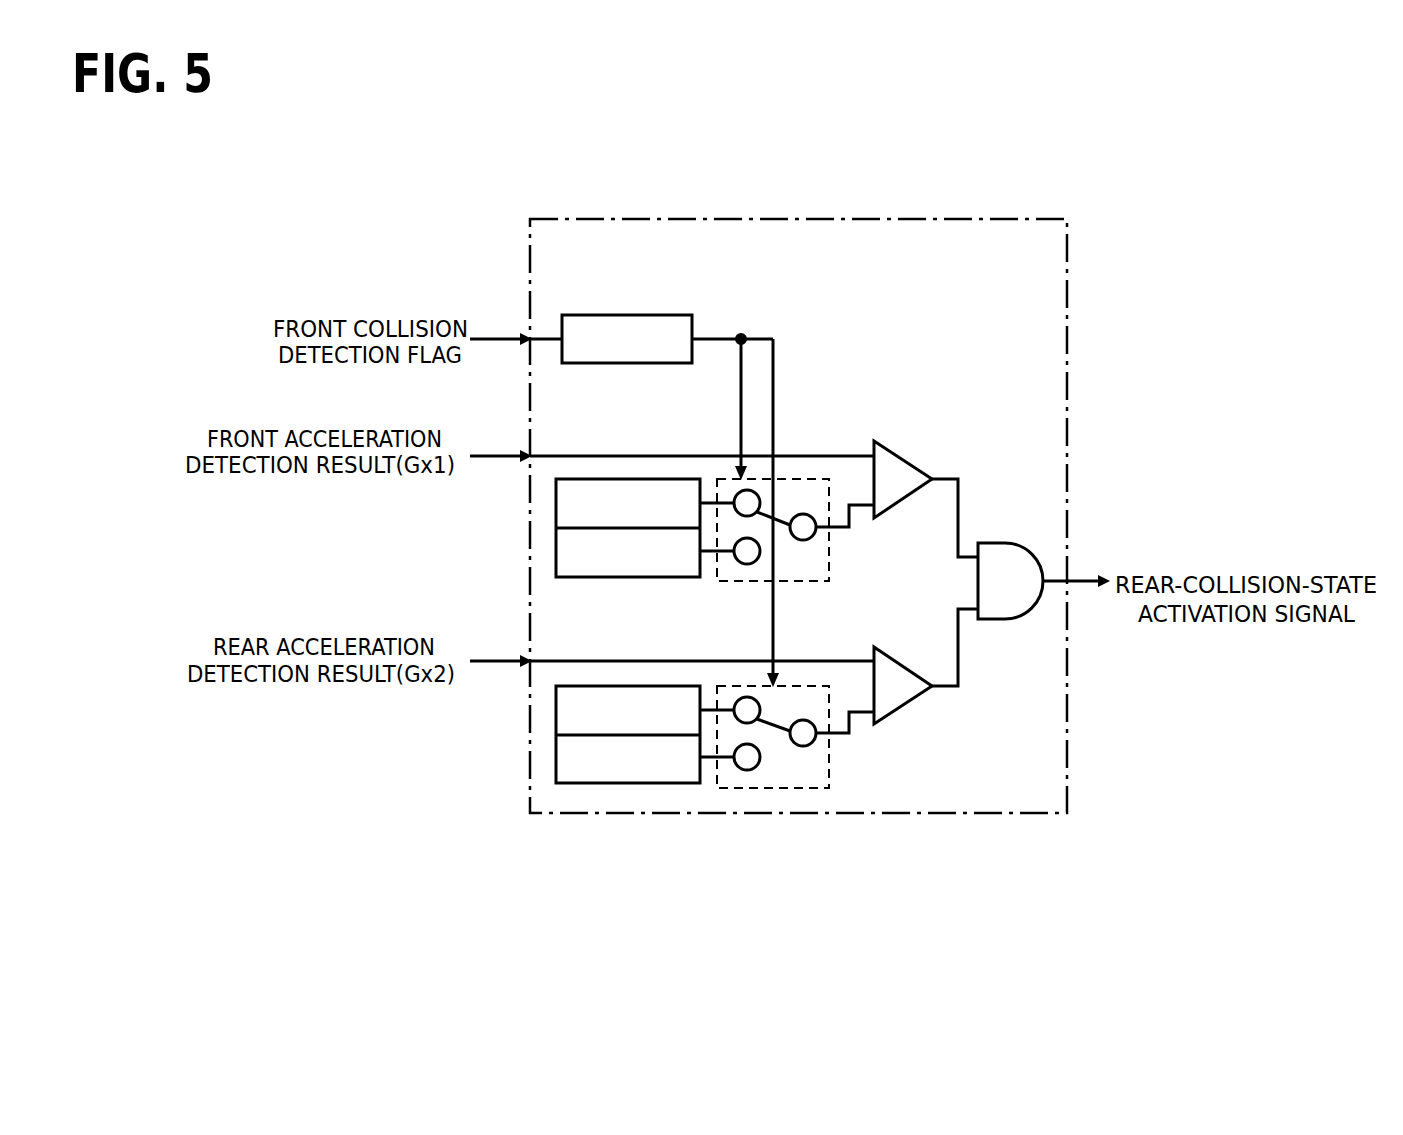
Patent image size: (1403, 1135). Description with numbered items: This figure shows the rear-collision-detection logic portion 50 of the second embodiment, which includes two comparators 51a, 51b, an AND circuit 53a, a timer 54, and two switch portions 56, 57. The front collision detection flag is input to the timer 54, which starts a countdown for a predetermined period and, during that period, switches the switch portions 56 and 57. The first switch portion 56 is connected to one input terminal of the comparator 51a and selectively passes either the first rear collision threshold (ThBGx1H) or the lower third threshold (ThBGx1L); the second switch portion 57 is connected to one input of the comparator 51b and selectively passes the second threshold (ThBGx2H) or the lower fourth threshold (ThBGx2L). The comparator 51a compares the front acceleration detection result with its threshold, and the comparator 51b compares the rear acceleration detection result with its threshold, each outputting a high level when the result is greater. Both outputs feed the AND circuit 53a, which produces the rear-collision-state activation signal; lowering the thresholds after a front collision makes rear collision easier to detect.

The rear-collision-detection logic portion 50 is at (855, 218).
The timer 54 is at (669, 315).
The first switch portion 56 is at (740, 581).
The second switch portion 57 is at (755, 788).
The comparator 51a is at (907, 457).
The comparator 51b is at (906, 705).
The AND circuit 53a is at (1001, 620).